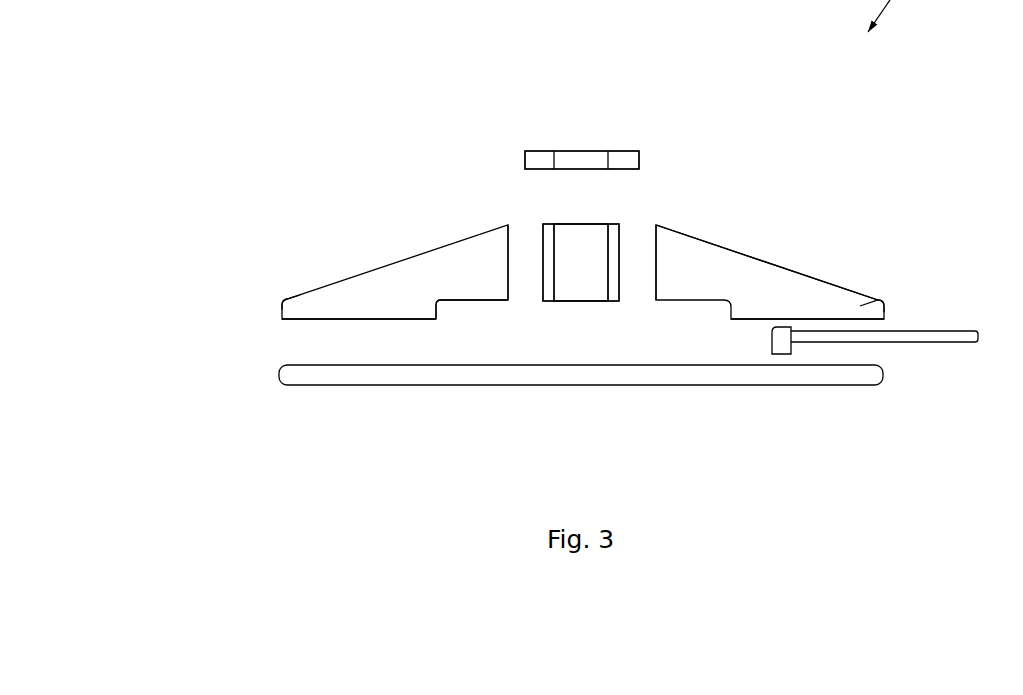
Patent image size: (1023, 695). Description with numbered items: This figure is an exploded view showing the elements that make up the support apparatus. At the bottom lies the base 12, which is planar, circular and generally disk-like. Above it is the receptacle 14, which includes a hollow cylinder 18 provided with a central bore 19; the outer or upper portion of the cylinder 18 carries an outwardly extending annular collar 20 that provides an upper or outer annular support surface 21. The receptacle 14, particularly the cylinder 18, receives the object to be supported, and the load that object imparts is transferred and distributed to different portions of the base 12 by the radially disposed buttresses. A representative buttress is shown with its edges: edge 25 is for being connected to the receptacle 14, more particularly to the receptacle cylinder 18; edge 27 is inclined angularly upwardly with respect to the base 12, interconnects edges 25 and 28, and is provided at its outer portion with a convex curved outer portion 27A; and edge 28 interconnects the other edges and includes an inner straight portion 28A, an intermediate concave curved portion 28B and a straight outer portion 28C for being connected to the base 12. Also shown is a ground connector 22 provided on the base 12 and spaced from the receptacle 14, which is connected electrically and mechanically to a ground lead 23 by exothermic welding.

The base 12 is at (611, 420).
The receptacle 14 is at (531, 338).
The hollow cylinder 18 is at (638, 226).
The central bore 19 is at (523, 194).
The annular collar 20 is at (637, 198).
The annular support surface 21 is at (582, 106).
The ground connector 22 is at (838, 300).
The ground lead 23 is at (905, 294).
The edge 25 is at (655, 334).
The edge 27 is at (790, 267).
The convex curved outer portion 27A is at (576, 260).
The edge 28 is at (802, 396).
The straight portion 28A is at (486, 401).
The intermediate concave curved portion 28B is at (404, 413).
The bottom surface of left wedge 28C is at (355, 393).